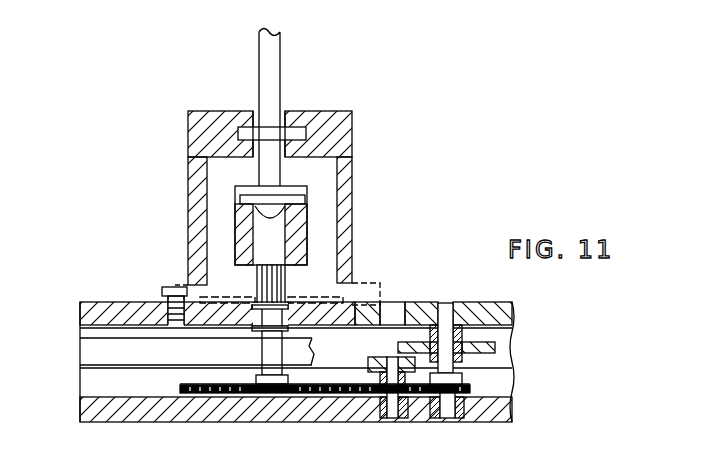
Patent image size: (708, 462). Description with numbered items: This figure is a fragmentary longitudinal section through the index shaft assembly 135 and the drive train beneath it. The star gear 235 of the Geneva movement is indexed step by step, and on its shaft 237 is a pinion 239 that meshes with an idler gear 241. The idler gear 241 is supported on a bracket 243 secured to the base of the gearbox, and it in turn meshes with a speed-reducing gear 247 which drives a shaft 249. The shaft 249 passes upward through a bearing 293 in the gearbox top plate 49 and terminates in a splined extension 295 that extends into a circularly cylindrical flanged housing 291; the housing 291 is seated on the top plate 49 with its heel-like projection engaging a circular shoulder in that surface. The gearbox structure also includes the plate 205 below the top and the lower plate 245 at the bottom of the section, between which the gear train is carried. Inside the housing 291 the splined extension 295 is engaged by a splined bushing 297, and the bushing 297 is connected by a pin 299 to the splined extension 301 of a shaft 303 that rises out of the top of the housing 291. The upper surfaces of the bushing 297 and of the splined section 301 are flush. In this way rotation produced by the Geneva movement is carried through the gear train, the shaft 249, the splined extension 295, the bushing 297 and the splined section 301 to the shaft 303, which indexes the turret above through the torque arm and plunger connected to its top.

The shaft 303 is at (282, 34).
The flanged housing 291 is at (190, 120).
The pin 299 is at (253, 182).
The index shaft assembly 135 is at (293, 145).
The splined bushing 297 is at (236, 230).
The splined extension 301 is at (300, 203).
The splined extension 295 is at (290, 290).
The bearing 293 is at (325, 297).
The top plate 205 is at (85, 336).
The shaft 249 is at (268, 352).
The bottom plate 245 is at (512, 412).
The shaft 237 is at (446, 303).
The star gear 235 is at (418, 277).
The top plate 49 is at (506, 300).
The bracket 243 is at (400, 350).
The idler gear 241 is at (380, 375).
The speed-reducing gear 247 is at (185, 389).
The pinion 239 is at (470, 388).